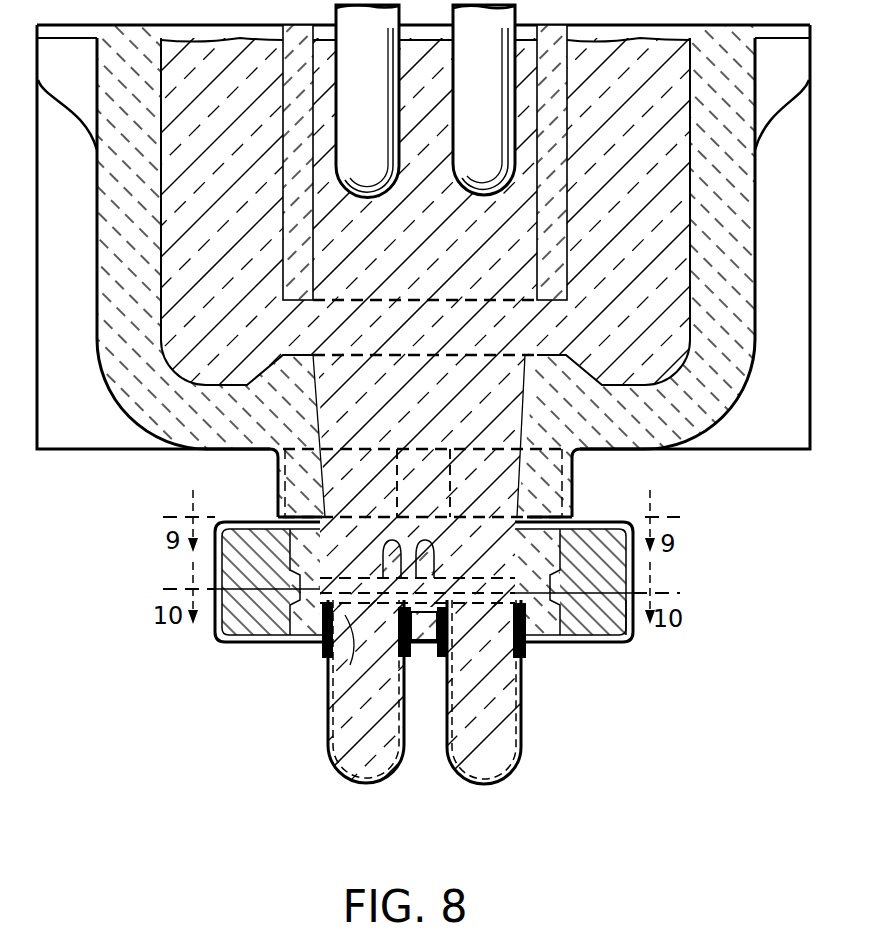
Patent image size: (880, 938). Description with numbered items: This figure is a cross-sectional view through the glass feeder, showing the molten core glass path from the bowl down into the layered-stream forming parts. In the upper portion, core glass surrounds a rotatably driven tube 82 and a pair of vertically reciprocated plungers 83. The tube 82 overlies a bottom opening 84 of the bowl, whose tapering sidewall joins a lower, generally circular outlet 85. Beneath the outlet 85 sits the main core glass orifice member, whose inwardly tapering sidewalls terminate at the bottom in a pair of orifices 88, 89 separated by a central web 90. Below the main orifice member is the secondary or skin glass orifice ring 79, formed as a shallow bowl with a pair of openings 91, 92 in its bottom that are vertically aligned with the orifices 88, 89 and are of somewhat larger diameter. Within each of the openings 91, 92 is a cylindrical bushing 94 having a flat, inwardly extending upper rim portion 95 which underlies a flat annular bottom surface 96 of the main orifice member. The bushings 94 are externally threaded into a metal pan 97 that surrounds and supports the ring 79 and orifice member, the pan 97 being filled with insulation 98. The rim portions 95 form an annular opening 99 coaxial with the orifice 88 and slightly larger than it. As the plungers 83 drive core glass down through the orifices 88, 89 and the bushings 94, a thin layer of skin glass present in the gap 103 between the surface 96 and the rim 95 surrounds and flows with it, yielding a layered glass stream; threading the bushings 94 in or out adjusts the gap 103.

The skin glass orifice ring 79 is at (598, 648).
The rotatably driven tube 82 is at (560, 250).
The plungers 83 is at (478, 160).
The bottom opening 84 is at (375, 358).
The outlet 85 is at (323, 506).
The orifice 88 is at (345, 580).
The orifice 89 is at (445, 580).
The central web 90 is at (410, 542).
The opening 91 is at (322, 652).
The opening 92 is at (524, 658).
The cylindrical bushing 94 is at (428, 655).
The upper rim portion 95 is at (398, 612).
The flat annular bottom surface 96 is at (455, 603).
The metal pan 97 is at (620, 645).
The insulation 98 is at (578, 648).
The annular opening 99 is at (340, 672).
The gap 103 is at (440, 542).